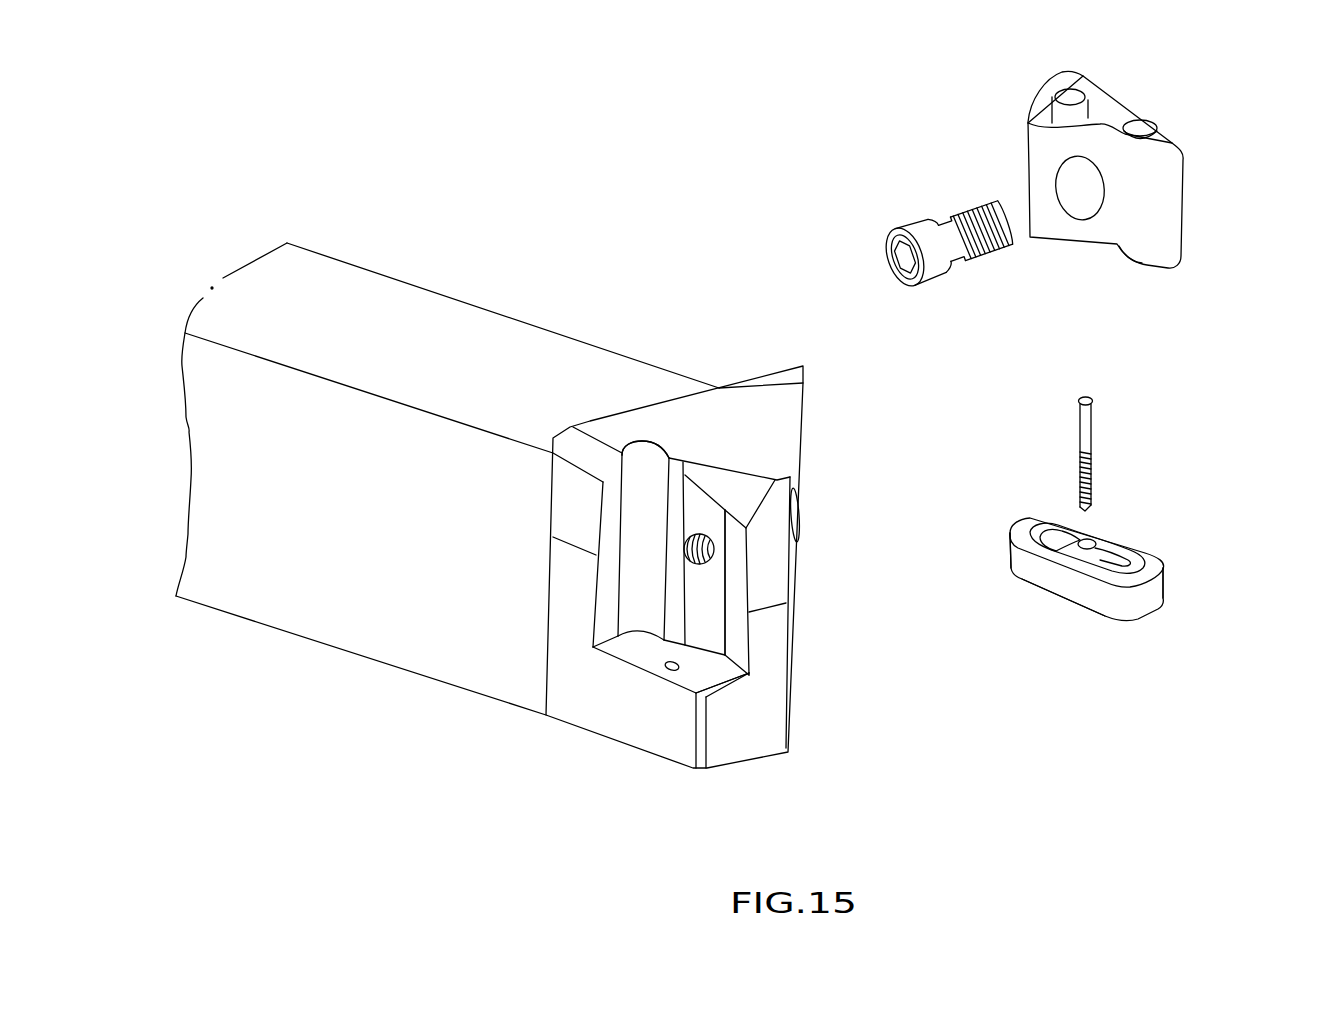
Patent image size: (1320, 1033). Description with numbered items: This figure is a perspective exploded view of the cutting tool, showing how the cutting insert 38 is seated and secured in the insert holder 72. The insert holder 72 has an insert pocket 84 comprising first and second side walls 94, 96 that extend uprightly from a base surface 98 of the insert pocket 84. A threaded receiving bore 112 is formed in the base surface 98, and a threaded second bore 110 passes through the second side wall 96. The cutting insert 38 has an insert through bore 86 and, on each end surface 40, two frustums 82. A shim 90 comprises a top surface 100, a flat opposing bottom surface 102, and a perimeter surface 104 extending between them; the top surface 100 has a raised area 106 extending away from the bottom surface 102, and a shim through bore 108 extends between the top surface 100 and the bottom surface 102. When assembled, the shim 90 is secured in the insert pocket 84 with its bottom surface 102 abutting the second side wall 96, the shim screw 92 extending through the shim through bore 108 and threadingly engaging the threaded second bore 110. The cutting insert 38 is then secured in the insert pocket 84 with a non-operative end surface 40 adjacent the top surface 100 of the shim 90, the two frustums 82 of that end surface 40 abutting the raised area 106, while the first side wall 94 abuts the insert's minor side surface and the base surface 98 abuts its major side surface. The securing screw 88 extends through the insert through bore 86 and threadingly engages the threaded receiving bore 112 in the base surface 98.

The insert holder 72 is at (413, 278).
The first side wall 94 is at (622, 482).
The threaded receiving bore 112 is at (699, 534).
The base surface 98 is at (737, 611).
The insert pocket 84 is at (737, 636).
The second side wall 96 is at (708, 678).
The threaded second bore 110 is at (664, 666).
The frustums 82 is at (1073, 91).
The end surface 40 is at (1118, 105).
The cutting insert 38 is at (1155, 169).
The insert through bore 86 is at (1082, 208).
The securing screw 88 is at (970, 266).
The shim screw 92 is at (1100, 423).
The raised area 106 is at (1057, 525).
The top surface 100 is at (1099, 539).
The shim 90 is at (1109, 562).
The shim through bore 108 is at (1012, 565).
The perimeter surface 104 is at (1160, 590).
The bottom surface 102 is at (1097, 608).